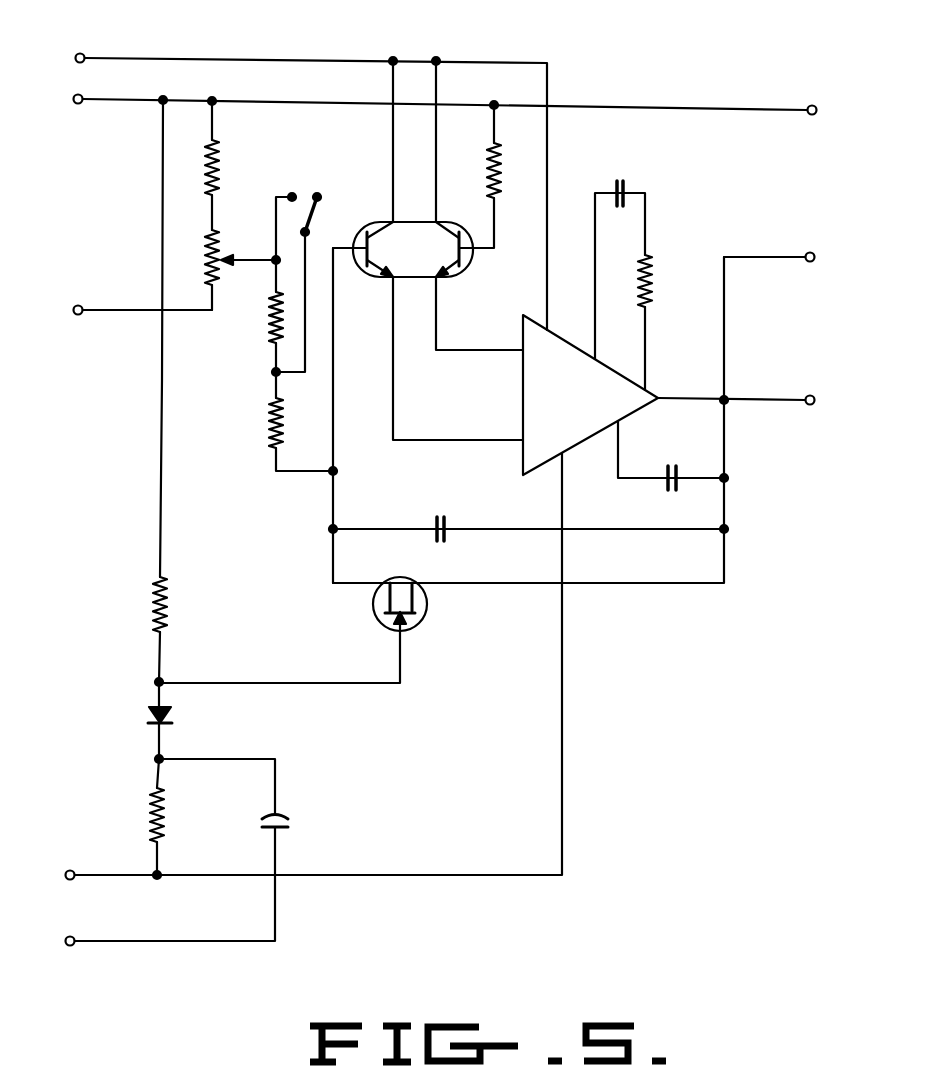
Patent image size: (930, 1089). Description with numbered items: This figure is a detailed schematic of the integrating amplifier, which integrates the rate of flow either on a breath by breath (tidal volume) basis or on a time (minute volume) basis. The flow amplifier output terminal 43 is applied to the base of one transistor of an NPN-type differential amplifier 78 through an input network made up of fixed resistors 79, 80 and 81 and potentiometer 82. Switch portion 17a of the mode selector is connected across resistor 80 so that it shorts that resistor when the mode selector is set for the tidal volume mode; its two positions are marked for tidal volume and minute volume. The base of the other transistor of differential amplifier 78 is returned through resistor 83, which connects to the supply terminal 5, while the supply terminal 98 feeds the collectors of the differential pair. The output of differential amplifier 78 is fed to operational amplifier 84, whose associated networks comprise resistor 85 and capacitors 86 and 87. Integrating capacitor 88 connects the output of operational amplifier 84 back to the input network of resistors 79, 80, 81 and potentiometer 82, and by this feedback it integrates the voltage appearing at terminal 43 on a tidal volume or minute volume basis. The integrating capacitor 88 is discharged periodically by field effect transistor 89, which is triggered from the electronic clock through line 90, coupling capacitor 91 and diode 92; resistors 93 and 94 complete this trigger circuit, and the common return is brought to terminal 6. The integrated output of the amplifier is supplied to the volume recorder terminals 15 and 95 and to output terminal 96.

The supply terminal 98 is at (59, 58).
The input terminal 5 is at (74, 99).
The flow amplifier output terminal 43 is at (74, 310).
The ground terminal 6 is at (66, 875).
The line 90 is at (66, 941).
The volume recorder terminal 95 is at (817, 110).
The volume recorder terminal 15 is at (815, 257).
The output terminal 96 is at (815, 400).
The fixed resistor 79 is at (218, 166).
The potentiometer 82 is at (205, 262).
The switch portion 17a is at (312, 190).
The fixed resistor 80 is at (269, 320).
The fixed resistor 81 is at (269, 430).
The differential amplifier 78 is at (450, 278).
The resistor 83 is at (500, 168).
The operational amplifier 84 is at (570, 418).
The capacitor 86 is at (632, 163).
The resistor 85 is at (651, 280).
The capacitor 87 is at (684, 451).
The integrating capacitor 88 is at (451, 501).
The field effect transistor 89 is at (420, 621).
The resistor 93 is at (166, 606).
The diode 92 is at (168, 716).
The resistor 94 is at (163, 818).
The coupling capacitor 91 is at (292, 820).